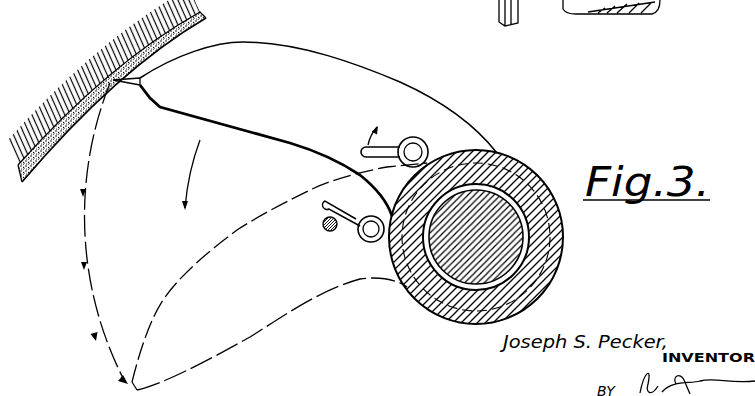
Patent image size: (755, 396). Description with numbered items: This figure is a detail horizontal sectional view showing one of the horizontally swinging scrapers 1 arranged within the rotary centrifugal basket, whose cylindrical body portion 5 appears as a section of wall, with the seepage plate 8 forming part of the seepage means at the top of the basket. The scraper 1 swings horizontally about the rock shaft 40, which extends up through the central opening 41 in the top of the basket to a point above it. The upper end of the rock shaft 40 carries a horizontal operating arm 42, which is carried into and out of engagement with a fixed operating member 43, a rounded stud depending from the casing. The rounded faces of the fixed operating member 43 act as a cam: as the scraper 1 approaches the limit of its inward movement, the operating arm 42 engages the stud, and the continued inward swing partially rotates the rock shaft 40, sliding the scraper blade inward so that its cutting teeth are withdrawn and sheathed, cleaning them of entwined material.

The horizontally swinging scraper 1 is at (353, 82).
The cylindrical body portion 5 is at (113, 43).
The seepage plate 8 is at (80, 119).
The rock shaft 40 is at (414, 151).
The central opening 41 is at (249, 7).
The horizontal operating arm 42 is at (387, 147).
The fixed operating member 43 is at (323, 227).